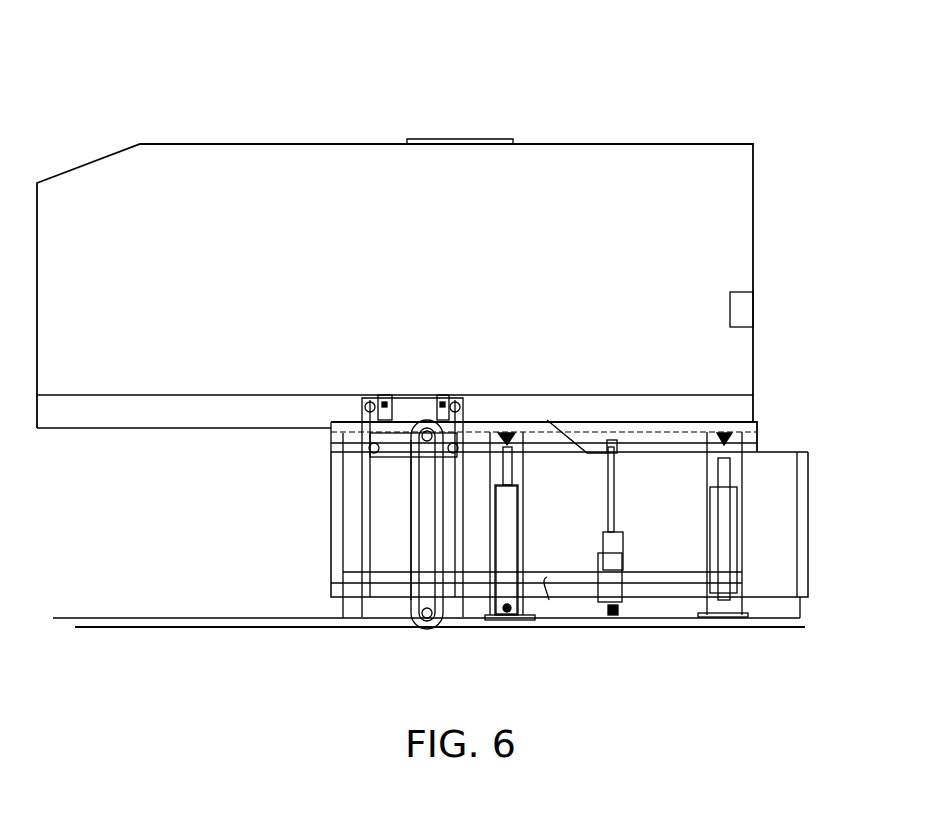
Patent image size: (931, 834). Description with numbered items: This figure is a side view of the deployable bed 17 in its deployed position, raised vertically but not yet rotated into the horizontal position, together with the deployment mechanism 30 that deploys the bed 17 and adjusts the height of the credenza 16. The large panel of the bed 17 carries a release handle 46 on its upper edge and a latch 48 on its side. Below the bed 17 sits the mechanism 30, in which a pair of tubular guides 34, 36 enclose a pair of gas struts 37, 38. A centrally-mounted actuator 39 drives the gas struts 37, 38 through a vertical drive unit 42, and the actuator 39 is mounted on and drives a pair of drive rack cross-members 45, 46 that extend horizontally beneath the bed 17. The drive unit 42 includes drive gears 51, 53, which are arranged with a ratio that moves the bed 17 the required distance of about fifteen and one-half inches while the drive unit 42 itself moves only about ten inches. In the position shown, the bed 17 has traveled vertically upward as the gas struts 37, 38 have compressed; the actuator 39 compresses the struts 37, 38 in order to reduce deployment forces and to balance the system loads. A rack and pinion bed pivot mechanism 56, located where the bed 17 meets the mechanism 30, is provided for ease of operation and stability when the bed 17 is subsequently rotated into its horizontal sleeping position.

The deployment mechanism 30 is at (325, 104).
The deployable bed 17 is at (113, 193).
The release handle 46 is at (455, 143).
The rack and pinion bed pivot mechanism 56 is at (453, 403).
The latch 48 is at (744, 310).
The drive rack cross-member 45 is at (542, 440).
The credenza 16 is at (668, 453).
The gas strut 38 is at (723, 502).
The tubular guide 36 is at (733, 553).
The drive gear 51 is at (372, 438).
The vertical drive unit 42 is at (410, 545).
The drive gear 53 is at (422, 614).
The tubular guide 34 is at (497, 537).
The gas strut 37 is at (508, 563).
The actuator 39 is at (618, 582).